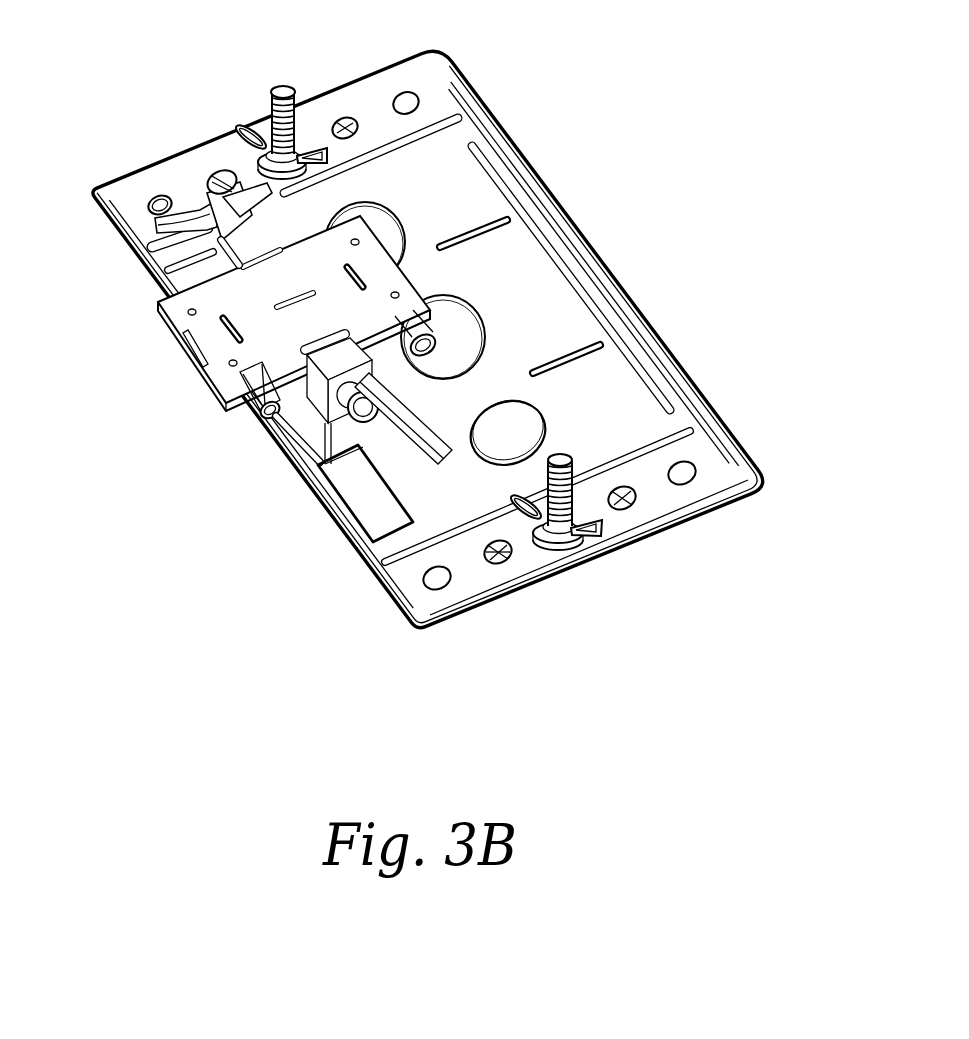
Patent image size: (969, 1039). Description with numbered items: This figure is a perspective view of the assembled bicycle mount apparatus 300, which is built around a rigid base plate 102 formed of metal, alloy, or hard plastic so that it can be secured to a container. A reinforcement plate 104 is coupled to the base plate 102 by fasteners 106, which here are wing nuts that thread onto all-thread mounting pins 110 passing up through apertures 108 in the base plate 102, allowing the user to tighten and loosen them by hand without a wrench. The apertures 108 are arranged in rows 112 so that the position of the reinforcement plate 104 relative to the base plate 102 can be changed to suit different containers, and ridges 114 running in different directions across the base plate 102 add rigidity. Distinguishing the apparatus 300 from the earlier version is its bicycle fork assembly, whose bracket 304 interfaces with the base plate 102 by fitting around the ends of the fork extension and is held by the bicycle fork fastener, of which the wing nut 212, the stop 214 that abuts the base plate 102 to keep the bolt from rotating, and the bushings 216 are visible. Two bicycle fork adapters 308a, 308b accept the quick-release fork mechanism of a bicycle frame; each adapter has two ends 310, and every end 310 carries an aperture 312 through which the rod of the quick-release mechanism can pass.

The base plate 102 is at (118, 184).
The reinforcement plate 104 is at (557, 576).
The fasteners 106 is at (247, 132).
The aperture 108 is at (404, 95).
The mounting pin 110 is at (284, 89).
The rows of apertures 112 is at (436, 80).
The ridges 114 is at (453, 118).
The wing nut 212 is at (186, 204).
The stop 214 is at (401, 440).
The bushings 216 is at (340, 368).
The bicycle mount apparatus 300 is at (126, 394).
The bracket 304 is at (233, 240).
The bicycle fork adapter 308a is at (162, 301).
The bicycle fork adapter 308b is at (370, 200).
The ends 310 is at (160, 281).
The apertures 312 is at (258, 414).